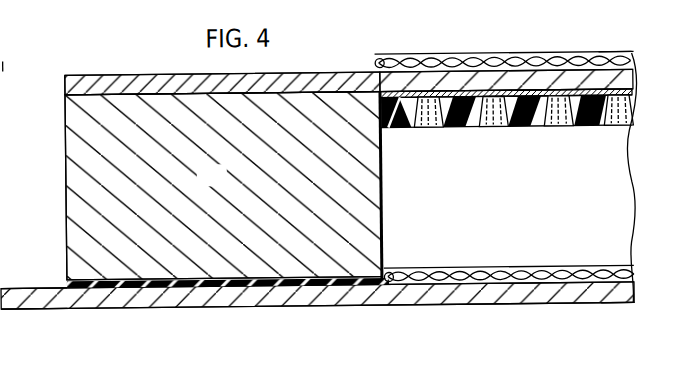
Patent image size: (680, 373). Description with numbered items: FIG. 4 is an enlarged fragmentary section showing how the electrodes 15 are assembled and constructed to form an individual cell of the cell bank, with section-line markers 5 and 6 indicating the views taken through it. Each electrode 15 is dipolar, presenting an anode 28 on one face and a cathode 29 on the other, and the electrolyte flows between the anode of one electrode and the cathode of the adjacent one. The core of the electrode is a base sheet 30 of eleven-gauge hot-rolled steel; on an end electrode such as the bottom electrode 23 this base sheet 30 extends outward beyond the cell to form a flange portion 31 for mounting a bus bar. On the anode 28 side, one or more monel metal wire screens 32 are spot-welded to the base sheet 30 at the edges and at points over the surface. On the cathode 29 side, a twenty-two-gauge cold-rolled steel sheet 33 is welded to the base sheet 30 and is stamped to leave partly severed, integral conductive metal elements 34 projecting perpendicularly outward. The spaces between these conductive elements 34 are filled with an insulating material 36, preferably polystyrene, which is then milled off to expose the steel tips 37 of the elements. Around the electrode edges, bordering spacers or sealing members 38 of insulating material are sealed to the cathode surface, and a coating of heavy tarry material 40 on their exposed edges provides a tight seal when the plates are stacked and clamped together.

The electrode 15 is at (644, 60).
The bottom electrode 23 is at (638, 287).
The anode 28 is at (430, 52).
The cathode 29 is at (428, 147).
The base sheet 30 is at (635, 84).
The flange portion 31 is at (32, 298).
The wire screen 32 is at (458, 54).
The cold-rolled steel sheet 33 is at (632, 91).
The conductive metal element 34 is at (552, 128).
The insulating material 36 is at (457, 128).
The steel tip 37 is at (483, 127).
The sealing or closure member 38 is at (222, 183).
The tarry material coating 40 is at (240, 285).
The section line 5- 5 is at (44, 115).
The section line 6- 6 is at (650, 264).